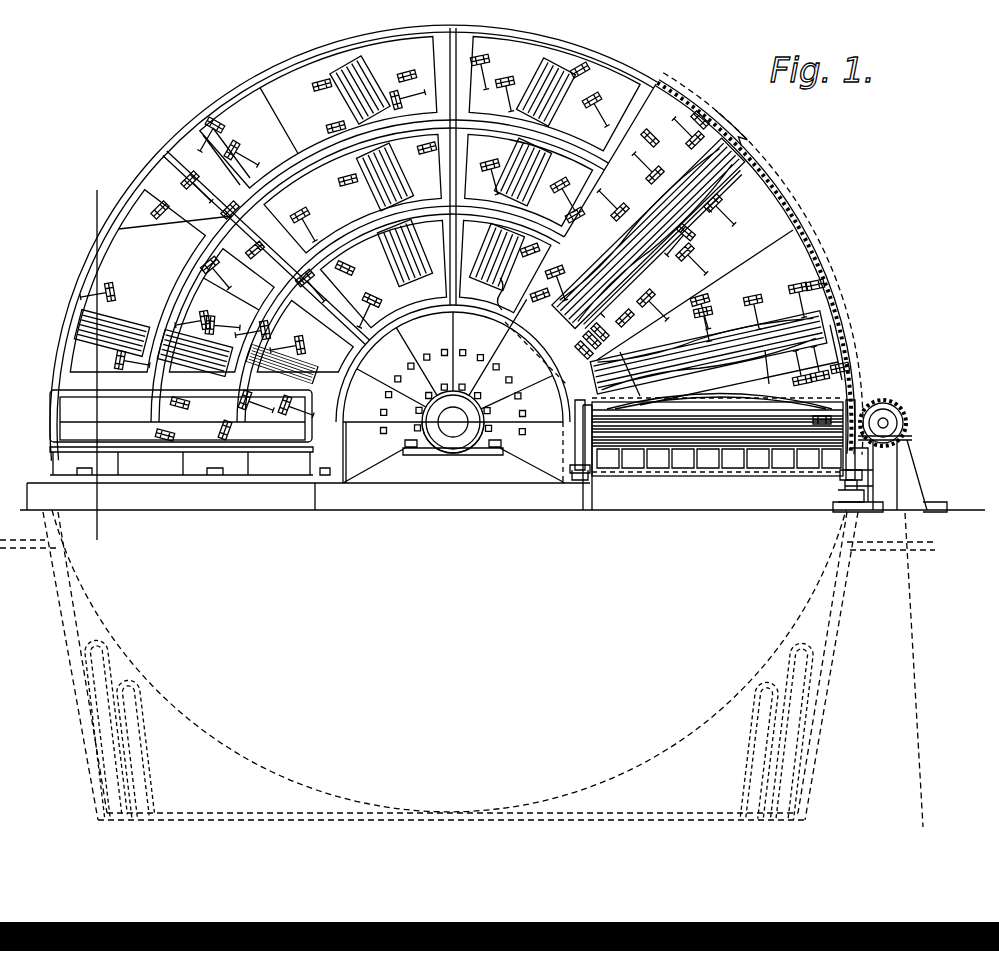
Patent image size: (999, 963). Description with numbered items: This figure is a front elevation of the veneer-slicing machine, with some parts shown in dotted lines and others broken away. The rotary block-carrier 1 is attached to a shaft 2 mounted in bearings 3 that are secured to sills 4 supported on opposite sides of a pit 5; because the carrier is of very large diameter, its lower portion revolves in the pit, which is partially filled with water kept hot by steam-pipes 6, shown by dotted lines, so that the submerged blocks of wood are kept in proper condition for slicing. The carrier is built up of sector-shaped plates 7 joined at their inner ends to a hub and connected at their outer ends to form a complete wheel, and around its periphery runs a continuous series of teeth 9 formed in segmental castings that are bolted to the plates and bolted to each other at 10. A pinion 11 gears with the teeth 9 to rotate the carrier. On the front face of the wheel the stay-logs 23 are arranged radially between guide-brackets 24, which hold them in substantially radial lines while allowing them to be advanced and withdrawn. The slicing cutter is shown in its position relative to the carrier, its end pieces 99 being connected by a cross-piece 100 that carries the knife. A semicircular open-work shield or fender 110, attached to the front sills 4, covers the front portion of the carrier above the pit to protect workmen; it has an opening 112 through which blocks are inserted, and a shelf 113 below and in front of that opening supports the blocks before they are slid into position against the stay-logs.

The rotary block-carrier 1 is at (672, 222).
The shaft 2 is at (530, 402).
The bearings 3 is at (500, 440).
The sills 4 is at (502, 466).
The pit 5 is at (467, 668).
The steam-pipes 6 is at (810, 716).
The sector-shaped plates 7 is at (464, 239).
The teeth 9 is at (793, 208).
The bolted joints of toothed segments 10 is at (838, 322).
The pinion 11 is at (902, 410).
The stay-logs 23 is at (218, 340).
The guide-brackets 24 is at (704, 303).
The end pieces 99 is at (585, 405).
The cross-piece 100 is at (732, 466).
The shield or fender 110 is at (72, 306).
The opening 112 is at (78, 403).
The shelf 113 is at (130, 440).